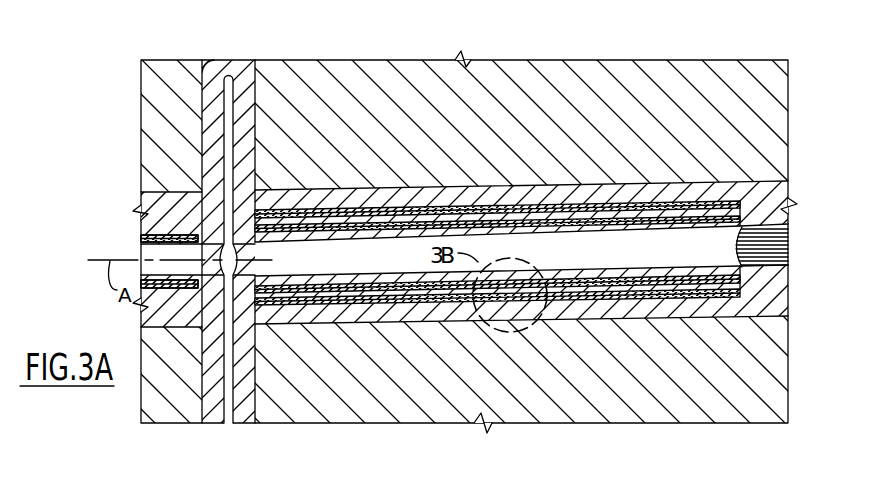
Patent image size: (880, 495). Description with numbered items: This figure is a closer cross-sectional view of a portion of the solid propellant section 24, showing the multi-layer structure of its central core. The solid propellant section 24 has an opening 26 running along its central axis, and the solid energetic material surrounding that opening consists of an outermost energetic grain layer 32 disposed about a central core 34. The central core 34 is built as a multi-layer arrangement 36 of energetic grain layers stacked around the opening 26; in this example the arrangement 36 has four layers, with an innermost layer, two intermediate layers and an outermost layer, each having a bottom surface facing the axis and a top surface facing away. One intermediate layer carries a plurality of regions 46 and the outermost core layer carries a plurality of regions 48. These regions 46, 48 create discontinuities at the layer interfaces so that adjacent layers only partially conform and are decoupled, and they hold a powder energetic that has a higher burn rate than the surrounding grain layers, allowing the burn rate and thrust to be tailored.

The solid propellant section 24 is at (296, 50).
The outermost energetic grain layer 32 is at (409, 78).
The central core 34 is at (535, 172).
The opening 26 is at (700, 248).
The regions 48 is at (609, 203).
The regions 46 is at (626, 232).
The multi-layer arrangement 36 is at (362, 268).